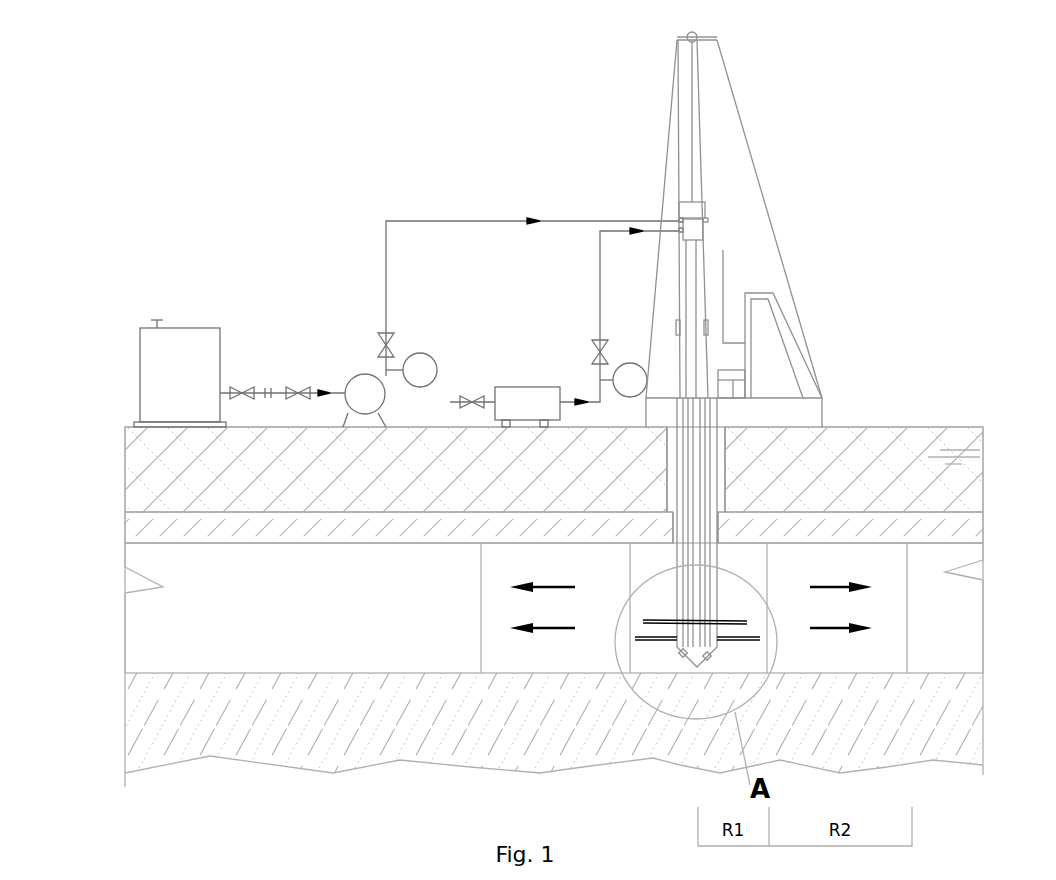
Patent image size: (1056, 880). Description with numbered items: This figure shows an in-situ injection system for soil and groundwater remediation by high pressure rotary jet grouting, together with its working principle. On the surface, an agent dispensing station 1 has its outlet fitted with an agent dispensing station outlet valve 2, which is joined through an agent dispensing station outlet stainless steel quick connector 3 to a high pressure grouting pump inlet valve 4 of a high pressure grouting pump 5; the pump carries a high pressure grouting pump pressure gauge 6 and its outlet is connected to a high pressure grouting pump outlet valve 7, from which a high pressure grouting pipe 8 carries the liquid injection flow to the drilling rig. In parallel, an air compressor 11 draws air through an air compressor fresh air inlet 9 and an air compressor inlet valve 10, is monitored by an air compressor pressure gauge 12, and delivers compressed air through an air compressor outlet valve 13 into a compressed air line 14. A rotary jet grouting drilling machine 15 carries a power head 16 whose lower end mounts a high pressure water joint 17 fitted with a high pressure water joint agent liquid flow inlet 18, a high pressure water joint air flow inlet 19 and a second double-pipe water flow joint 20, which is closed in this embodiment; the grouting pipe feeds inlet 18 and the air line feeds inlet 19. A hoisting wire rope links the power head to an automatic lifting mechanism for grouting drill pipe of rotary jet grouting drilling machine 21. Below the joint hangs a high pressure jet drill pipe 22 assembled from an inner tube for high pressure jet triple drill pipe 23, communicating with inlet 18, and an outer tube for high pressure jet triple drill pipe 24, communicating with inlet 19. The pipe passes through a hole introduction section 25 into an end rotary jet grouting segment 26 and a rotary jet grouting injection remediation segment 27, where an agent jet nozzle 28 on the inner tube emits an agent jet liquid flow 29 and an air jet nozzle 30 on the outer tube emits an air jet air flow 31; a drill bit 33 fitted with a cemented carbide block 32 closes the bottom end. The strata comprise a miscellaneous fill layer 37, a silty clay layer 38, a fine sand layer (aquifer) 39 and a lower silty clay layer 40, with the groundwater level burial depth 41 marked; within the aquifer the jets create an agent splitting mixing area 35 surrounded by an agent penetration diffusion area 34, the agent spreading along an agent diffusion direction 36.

The agent dispensing station 1 is at (165, 357).
The agent dispensing station outlet valve 2 is at (244, 386).
The agent dispensing station outlet stainless steel quick connector 3 is at (268, 386).
The high pressure grouting pump inlet valve 4 is at (298, 386).
The high pressure grouting pump 5 is at (362, 388).
The high pressure grouting pump pressure gauge 6 is at (420, 353).
The high pressure grouting pump outlet valve 7 is at (383, 342).
The high pressure grouting pipe 8 is at (478, 220).
The air compressor fresh air inlet 9 is at (450, 402).
The air compressor inlet valve 10 is at (472, 400).
The air compressor 11 is at (525, 402).
The air compressor pressure gauge 12 is at (630, 362).
The air compressor outlet valve 13 is at (597, 352).
The compressed air line 14 is at (600, 275).
The rotary jet grouting drilling machine 15 is at (743, 130).
The power head 16 is at (705, 209).
The high pressure water joint 17 is at (703, 237).
The high pressure water joint agent liquid flow inlet 18 is at (680, 218).
The high pressure water joint air flow inlet 19 is at (683, 231).
The second double-pipe water flow joint 20 is at (708, 221).
The automatic lifting mechanism for grouting drill pipe of rotary jet grouting drill 21 is at (737, 383).
The high pressure jet drill pipe 22 is at (712, 440).
The inner tube for high pressure jet triple drill pipe 23 is at (698, 467).
The outer tube for high pressure jet triple drill pipe 24 is at (710, 490).
The hole introduction section 25 is at (727, 502).
The end rotary jet grouting segment 26 is at (727, 535).
The rotary jet grouting injection remediation segment 27 is at (678, 563).
The agent jet nozzle 28 is at (700, 621).
The agent jet liquid flow 29 is at (713, 617).
The air jet nozzle 30 is at (683, 652).
The air jet air flow 31 is at (643, 637).
The cemented carbide block 32 is at (713, 653).
The drill bit 33 is at (700, 665).
The agent penetration diffusion area 34 is at (470, 665).
The agent splitting mixing area 35 is at (520, 655).
The agent diffusion direction 36 is at (983, 563).
The miscellaneous fill layer 37 is at (157, 475).
The silty clay layer 38 is at (157, 530).
The fine sand layer (aquifer) 39 is at (155, 650).
The silty clay layer 40 is at (153, 735).
The groundwater level burial depth 41 is at (960, 448).